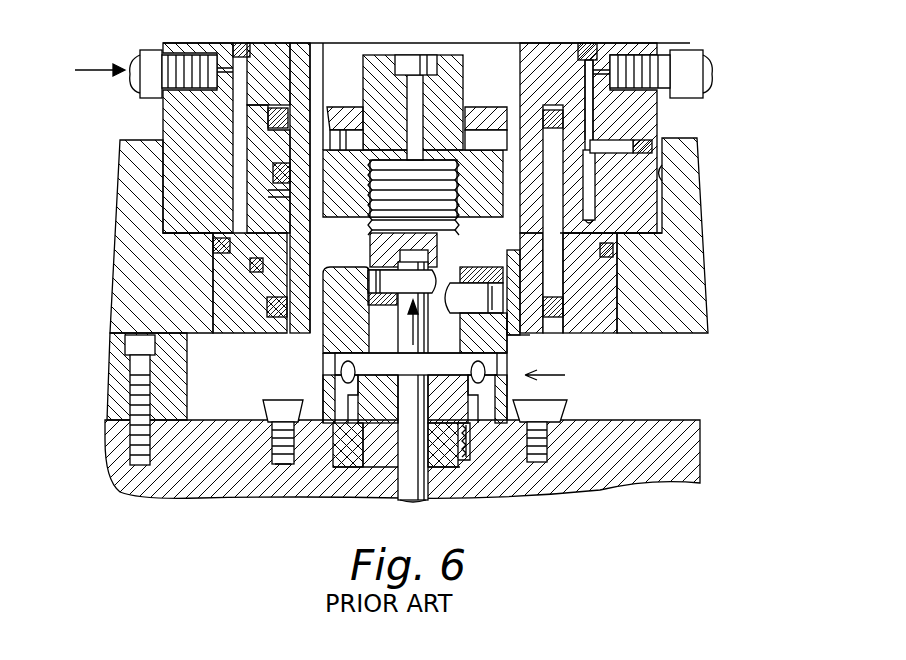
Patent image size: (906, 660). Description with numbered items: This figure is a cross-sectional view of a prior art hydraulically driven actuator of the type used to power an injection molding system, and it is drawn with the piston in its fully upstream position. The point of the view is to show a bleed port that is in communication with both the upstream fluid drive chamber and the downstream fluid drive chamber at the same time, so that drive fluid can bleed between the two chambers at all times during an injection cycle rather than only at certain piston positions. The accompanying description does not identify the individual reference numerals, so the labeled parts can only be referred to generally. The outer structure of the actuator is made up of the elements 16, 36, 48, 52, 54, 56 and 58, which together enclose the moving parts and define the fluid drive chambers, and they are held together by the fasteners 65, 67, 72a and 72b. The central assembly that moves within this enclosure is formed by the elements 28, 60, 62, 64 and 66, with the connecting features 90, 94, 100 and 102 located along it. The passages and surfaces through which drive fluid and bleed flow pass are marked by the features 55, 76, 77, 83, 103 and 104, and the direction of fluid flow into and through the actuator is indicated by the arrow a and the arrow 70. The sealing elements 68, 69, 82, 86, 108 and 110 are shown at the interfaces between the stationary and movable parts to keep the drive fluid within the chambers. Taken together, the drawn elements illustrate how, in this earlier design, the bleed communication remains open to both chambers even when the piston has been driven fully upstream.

The base plate 16 is at (700, 420).
The rod 28 is at (402, 506).
The right clamp body 36 is at (708, 333).
The left clamp body 48 is at (118, 362).
The left lid 52 is at (490, 72).
The right lid 54 is at (647, 45).
The groove 55 is at (660, 173).
The spacer 56 is at (528, 322).
The block 58 is at (600, 325).
The center block 60 is at (390, 62).
The threaded stud 62 is at (447, 228).
The lower housing 64 is at (325, 357).
The screw 65 is at (565, 410).
The bolt head 66 is at (420, 62).
The screw 67 is at (287, 403).
The seal 68 is at (330, 110).
The seal ring 69 is at (360, 103).
The flow direction 70 is at (562, 375).
The bolt 72a is at (145, 50).
The bolt 72b is at (693, 52).
The channel 76 is at (587, 198).
The step surface 77 is at (283, 232).
The O-ring seal 82 is at (277, 175).
The gap 83 is at (287, 194).
The O-ring 86 is at (348, 384).
The pin 90 is at (428, 282).
The pin 94 is at (580, 267).
The sleeve 100 is at (465, 428).
The thread 102 is at (465, 430).
The slot 103 is at (568, 45).
The channel 104 is at (613, 145).
The seal 108 is at (235, 44).
The seal 110 is at (300, 137).
The flow arrow a is at (90, 68).